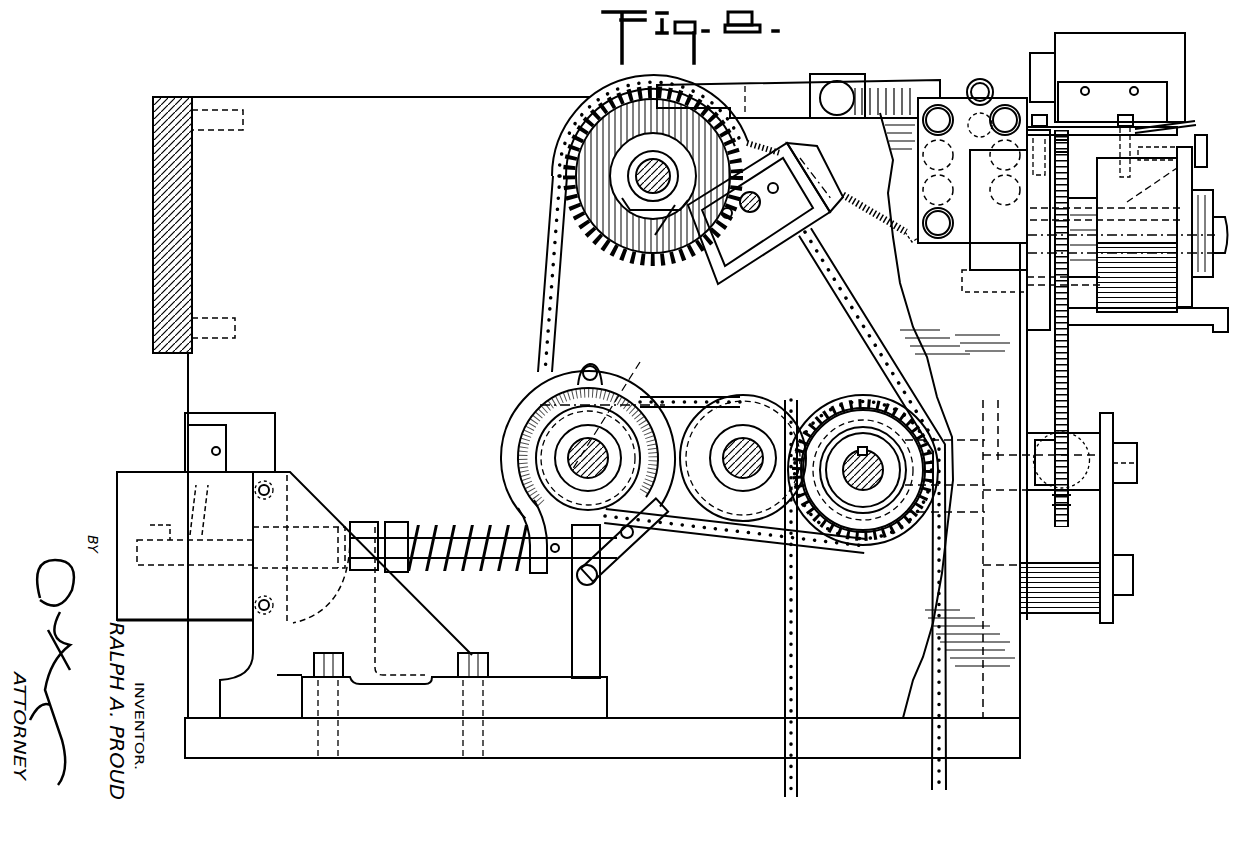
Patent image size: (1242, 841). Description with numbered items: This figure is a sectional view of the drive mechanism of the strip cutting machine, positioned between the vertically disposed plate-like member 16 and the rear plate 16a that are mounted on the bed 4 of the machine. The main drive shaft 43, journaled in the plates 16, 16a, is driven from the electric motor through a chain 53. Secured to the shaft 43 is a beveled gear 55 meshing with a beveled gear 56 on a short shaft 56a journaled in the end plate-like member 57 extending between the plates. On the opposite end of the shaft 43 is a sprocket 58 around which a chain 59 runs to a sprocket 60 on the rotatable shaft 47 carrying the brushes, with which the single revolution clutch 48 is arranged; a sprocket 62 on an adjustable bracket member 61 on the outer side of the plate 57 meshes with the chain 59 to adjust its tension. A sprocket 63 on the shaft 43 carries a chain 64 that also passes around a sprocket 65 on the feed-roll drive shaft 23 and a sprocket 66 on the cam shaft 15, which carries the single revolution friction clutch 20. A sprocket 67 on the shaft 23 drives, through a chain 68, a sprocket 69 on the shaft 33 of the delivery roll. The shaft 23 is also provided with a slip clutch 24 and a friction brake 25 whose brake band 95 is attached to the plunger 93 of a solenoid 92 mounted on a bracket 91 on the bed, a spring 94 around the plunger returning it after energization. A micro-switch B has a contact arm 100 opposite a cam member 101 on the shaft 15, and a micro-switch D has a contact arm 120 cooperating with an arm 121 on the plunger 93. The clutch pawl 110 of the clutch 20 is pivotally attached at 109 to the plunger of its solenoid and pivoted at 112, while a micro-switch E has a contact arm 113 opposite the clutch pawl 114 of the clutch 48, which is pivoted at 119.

The bed 4 is at (700, 745).
The shaft 15 is at (640, 175).
The plate-like member 16 is at (962, 636).
The plate 16a is at (383, 106).
The single revolution friction clutch 20 is at (618, 125).
The drive shaft 23 is at (600, 488).
The slip clutch 24 is at (555, 470).
The friction brake 25 is at (525, 420).
The shaft 33 is at (747, 478).
The main drive shaft 43 is at (864, 490).
The rotatable shaft 47 is at (1218, 262).
The single revolution clutch 48 is at (1165, 192).
The chain 53 is at (782, 660).
The beveled gear 55 is at (848, 435).
The beveled gear 56 is at (930, 428).
The short shaft 56a is at (1000, 426).
The end plate-like member 57 is at (1021, 668).
The sprocket 58 is at (1065, 512).
The chain 59 is at (1069, 368).
The sprocket 60 is at (1064, 172).
The bracket member 61 is at (1112, 526).
The sprocket 62 is at (1065, 443).
The sprocket 63 is at (832, 410).
The chain 64 is at (538, 308).
The sprocket 65 is at (528, 500).
The sprocket 66 is at (615, 240).
The sprocket 67 is at (603, 405).
The chain 68 is at (694, 400).
The sprocket 69 is at (752, 398).
The bracket 91 is at (388, 735).
The solenoid 92 is at (122, 497).
The plunger 93 is at (418, 532).
The spring 94 is at (464, 558).
The brake band 95 is at (503, 446).
The contact arm 100 is at (657, 238).
The cam member 101 is at (633, 188).
The pivotal attachment 109 is at (982, 90).
The clutch pawl 110 is at (792, 92).
The pivot 112 is at (838, 92).
The contact arm 113 is at (1185, 126).
The clutch pawl 114 is at (1188, 130).
The pivot 119 is at (1195, 148).
The contact arm 120 is at (176, 535).
The arm 121 is at (148, 525).
The micro-switch B is at (760, 255).
The micro-switch D is at (262, 436).
The micro-switch E is at (1155, 92).